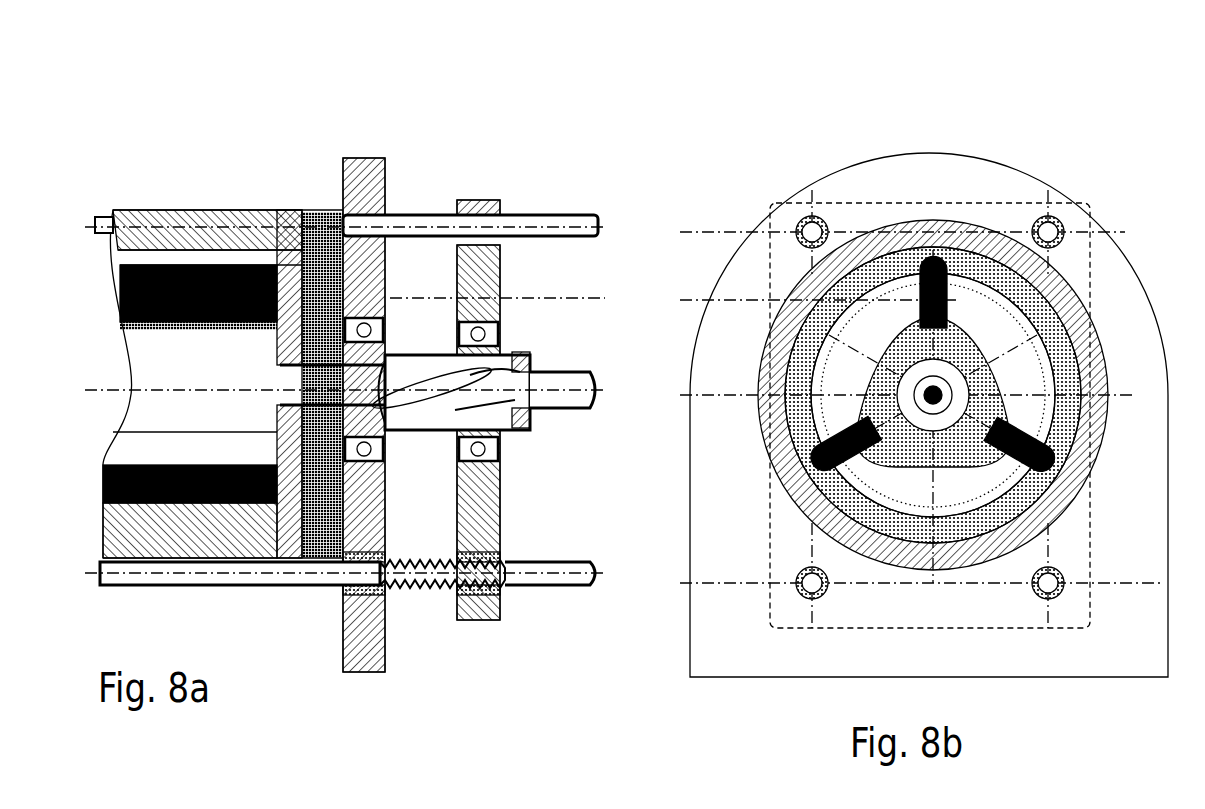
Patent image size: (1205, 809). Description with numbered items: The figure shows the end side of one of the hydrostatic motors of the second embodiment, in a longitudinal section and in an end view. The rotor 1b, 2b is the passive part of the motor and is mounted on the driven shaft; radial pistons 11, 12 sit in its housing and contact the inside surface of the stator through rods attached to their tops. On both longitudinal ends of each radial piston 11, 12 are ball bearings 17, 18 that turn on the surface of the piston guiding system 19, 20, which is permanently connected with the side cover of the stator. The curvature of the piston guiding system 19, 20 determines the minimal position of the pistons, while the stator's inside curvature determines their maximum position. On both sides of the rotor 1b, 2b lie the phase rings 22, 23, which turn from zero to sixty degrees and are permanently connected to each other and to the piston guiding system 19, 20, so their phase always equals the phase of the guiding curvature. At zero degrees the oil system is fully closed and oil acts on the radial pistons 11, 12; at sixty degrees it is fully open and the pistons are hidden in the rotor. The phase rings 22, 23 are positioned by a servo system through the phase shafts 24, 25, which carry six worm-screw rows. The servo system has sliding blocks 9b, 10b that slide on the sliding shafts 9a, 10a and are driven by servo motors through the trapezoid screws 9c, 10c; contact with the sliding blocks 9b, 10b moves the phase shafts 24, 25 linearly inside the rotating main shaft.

In FIG. 8a, the phase ring 22 is at (343, 193).
In FIG. 8a, the phase ring 23 is at (260, 337).
In FIG. 8a, the sliding shaft 9a is at (418, 220).
In FIG. 8a, the sliding shaft 10a is at (345, 115).
In FIG. 8a, the phase shaft 24 is at (455, 217).
In FIG. 8a, the phase shaft 25 is at (495, 311).
In FIG. 8a, the sliding block 9b is at (485, 200).
In FIG. 8b, the sliding block 9b is at (845, 473).
In FIG. 8a, the sliding block 10b is at (591, 110).
In FIG. 8a, the trapezoid screw 9c is at (412, 590).
In FIG. 8a, the trapezoid screw 10c is at (345, 651).
In FIG. 8b, the trapezoid screw 10c is at (845, 628).
In FIG. 8b, the rotor 1b is at (929, 342).
In FIG. 8b, the rotor 2b is at (887, 290).
In FIG. 8b, the radial piston 11 is at (934, 245).
In FIG. 8b, the radial piston 12 is at (933, 290).
In FIG. 8b, the ball bearing 17 is at (958, 302).
In FIG. 8b, the ball bearing 18 is at (980, 296).
In FIG. 8b, the piston guiding system 19 is at (943, 450).
In FIG. 8b, the piston guiding system 20 is at (1027, 550).